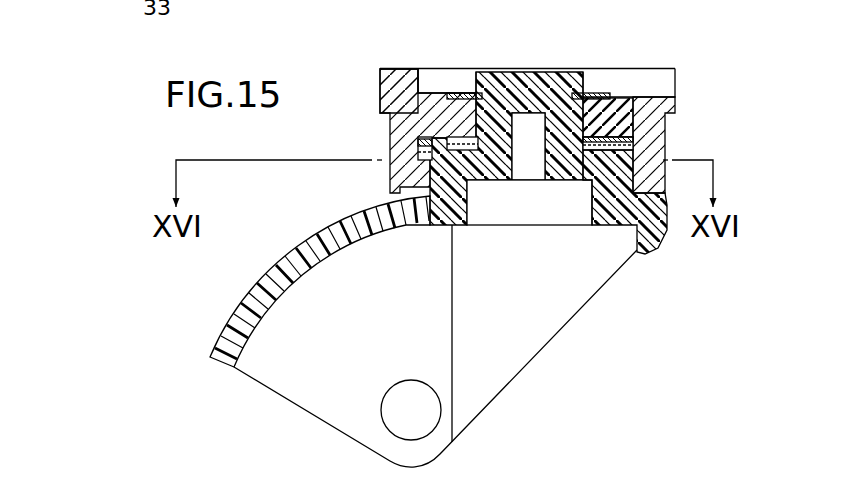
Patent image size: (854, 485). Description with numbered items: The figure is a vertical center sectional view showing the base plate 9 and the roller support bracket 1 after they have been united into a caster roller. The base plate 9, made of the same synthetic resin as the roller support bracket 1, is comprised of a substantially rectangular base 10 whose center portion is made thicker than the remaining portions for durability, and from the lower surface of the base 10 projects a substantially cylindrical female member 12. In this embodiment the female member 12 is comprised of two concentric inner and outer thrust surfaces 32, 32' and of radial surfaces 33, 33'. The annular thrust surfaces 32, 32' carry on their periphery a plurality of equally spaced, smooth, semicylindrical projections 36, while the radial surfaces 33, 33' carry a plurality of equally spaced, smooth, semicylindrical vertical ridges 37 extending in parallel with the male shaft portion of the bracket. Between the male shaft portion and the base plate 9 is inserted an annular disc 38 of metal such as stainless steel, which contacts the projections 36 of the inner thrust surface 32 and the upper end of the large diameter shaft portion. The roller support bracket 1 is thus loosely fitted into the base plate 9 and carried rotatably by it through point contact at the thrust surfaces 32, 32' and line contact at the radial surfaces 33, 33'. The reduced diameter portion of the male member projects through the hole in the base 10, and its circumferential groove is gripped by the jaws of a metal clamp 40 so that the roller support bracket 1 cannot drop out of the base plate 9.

The roller support bracket 1 is at (385, 297).
The base plate 9 is at (370, 64).
The base 10 is at (403, 93).
The female member 12 is at (390, 178).
The inner thrust surface 32 is at (380, 138).
The outer thrust surface 32' is at (511, 119).
The radial surface 33 is at (157, 10).
The radial surface 33' is at (506, 66).
The projections 36 is at (607, 127).
The vertical ridges 37 is at (665, 151).
The annular disc 38 is at (588, 128).
The metal clamp 40 is at (588, 96).